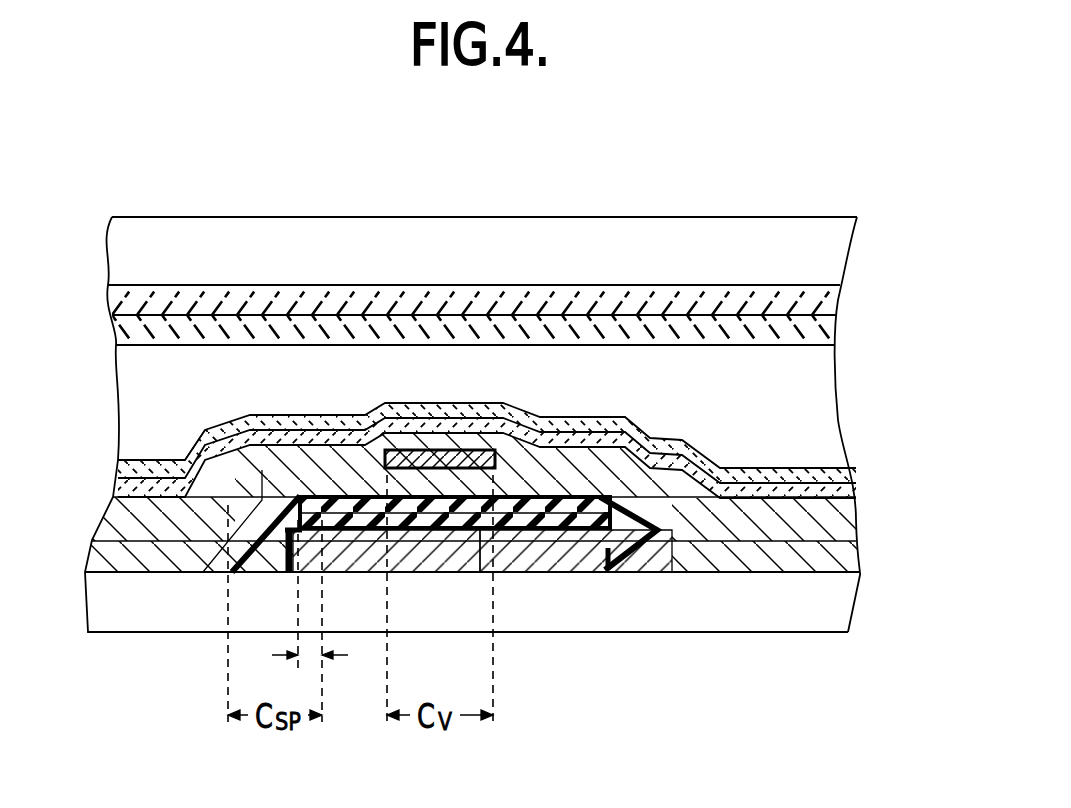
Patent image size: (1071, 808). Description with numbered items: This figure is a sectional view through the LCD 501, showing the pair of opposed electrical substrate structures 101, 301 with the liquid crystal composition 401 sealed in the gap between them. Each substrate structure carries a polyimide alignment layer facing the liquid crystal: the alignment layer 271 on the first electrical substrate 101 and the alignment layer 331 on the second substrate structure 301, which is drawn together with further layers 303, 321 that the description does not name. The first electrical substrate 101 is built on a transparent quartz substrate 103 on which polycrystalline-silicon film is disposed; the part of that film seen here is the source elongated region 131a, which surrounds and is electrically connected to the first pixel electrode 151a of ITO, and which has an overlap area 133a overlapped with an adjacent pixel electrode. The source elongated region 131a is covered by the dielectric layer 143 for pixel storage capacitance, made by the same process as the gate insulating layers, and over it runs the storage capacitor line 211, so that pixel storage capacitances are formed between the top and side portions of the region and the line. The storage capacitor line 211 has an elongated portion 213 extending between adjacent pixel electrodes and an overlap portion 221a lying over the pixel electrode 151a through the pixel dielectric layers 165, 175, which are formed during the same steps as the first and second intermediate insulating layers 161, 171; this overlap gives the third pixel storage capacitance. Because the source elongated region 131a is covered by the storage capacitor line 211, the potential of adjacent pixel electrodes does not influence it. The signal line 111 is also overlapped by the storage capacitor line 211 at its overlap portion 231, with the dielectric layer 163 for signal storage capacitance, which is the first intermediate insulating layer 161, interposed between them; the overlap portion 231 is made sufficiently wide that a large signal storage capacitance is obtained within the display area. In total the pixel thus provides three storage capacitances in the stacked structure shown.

The LCD 501 is at (718, 185).
The electrical substrate structure 301 is at (842, 212).
The upper glass substrate 303 is at (815, 250).
The color filter layer 321 is at (812, 300).
The alignment layer 331 is at (815, 333).
The liquid crystal composition 401 is at (808, 375).
The first electrical substrate 101 is at (856, 612).
The quartz substrate 103 is at (812, 605).
The first intermediate insulating layer 161 is at (822, 560).
The second intermediate insulating layer 171 is at (822, 522).
The dielectric layer for signal storage capacitance 163 is at (524, 455).
The signal line 111 is at (432, 450).
The elongated portion 213 is at (512, 548).
The overlap portion 231 is at (433, 575).
The overlap area 133a is at (316, 576).
The source elongated region 131a is at (574, 558).
The overlap portion 221a is at (250, 570).
The dielectric layer for pixel storage capacitance 143 is at (632, 560).
The storage capacitor line 211 is at (665, 577).
The pixel dielectric layer 165 is at (283, 462).
The pixel dielectric layer 175 is at (305, 455).
The first pixel electrode 151a is at (125, 480).
The alignment layer 271 is at (188, 446).